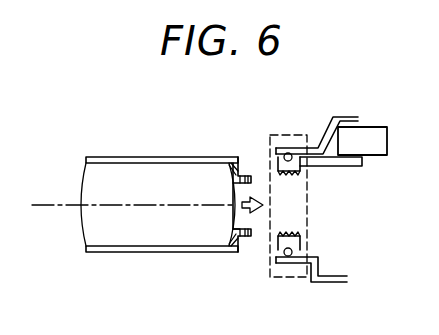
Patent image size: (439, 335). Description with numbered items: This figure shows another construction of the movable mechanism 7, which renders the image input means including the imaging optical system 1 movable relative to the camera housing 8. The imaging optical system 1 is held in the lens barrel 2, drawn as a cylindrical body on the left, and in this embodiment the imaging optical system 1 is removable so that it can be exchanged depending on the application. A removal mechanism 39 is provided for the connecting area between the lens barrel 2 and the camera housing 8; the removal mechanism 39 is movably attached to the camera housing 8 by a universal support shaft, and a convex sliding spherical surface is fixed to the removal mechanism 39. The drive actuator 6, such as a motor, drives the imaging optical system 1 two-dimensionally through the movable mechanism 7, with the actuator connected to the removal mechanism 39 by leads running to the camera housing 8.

The imaging optical system 1 is at (167, 237).
The lens barrel 2 is at (203, 160).
The drive actuator 6 is at (375, 136).
The movable mechanism 7 is at (287, 135).
The camera housing 8 is at (347, 117).
The removal mechanism 39 is at (299, 247).